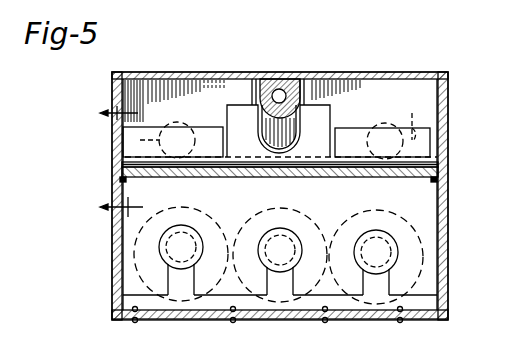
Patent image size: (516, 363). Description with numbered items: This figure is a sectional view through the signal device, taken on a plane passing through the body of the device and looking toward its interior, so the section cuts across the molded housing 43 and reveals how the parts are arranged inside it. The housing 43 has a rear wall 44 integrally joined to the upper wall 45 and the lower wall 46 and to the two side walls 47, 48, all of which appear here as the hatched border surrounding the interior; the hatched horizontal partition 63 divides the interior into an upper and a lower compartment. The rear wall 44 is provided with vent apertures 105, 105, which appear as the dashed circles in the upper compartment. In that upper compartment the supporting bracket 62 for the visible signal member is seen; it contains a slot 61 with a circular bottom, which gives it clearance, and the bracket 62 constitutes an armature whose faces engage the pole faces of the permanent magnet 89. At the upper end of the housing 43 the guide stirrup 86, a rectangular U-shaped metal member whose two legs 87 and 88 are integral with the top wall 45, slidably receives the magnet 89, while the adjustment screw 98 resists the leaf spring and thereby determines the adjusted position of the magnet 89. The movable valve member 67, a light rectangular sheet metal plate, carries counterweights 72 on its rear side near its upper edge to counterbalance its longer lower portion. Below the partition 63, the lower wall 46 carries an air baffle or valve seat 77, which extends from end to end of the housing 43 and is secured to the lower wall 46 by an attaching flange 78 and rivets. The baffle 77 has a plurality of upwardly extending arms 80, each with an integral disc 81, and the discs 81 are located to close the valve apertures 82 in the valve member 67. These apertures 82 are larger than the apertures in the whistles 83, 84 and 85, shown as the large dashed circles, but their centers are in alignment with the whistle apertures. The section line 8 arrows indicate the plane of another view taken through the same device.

The section line 8 is at (116, 160).
The housing 43 is at (448, 198).
The rear wall 44 is at (428, 93).
The upper wall 45 is at (392, 73).
The lower wall 46 is at (367, 321).
The side wall 47 is at (112, 165).
The side wall 48 is at (440, 157).
The slot 61 is at (293, 138).
The supporting bracket 62 is at (330, 112).
The partition plate 63 is at (330, 178).
The valve member 67 is at (432, 225).
The counterweights 72 is at (413, 117).
The air baffle or valve seat 77 is at (265, 320).
The attaching flange 78 is at (212, 310).
The arms 80 is at (190, 272).
The disc 81 is at (192, 236).
The valve apertures 82 is at (205, 236).
The whistle 83 is at (157, 214).
The whistle 84 is at (262, 240).
The whistle 85 is at (374, 211).
The guide stirrup 86 is at (260, 128).
The leg 87 is at (306, 79).
The leg 88 is at (252, 106).
The permanent magnet 89 is at (254, 80).
The adjustment screw 98 is at (292, 79).
The vent apertures 105 is at (177, 124).